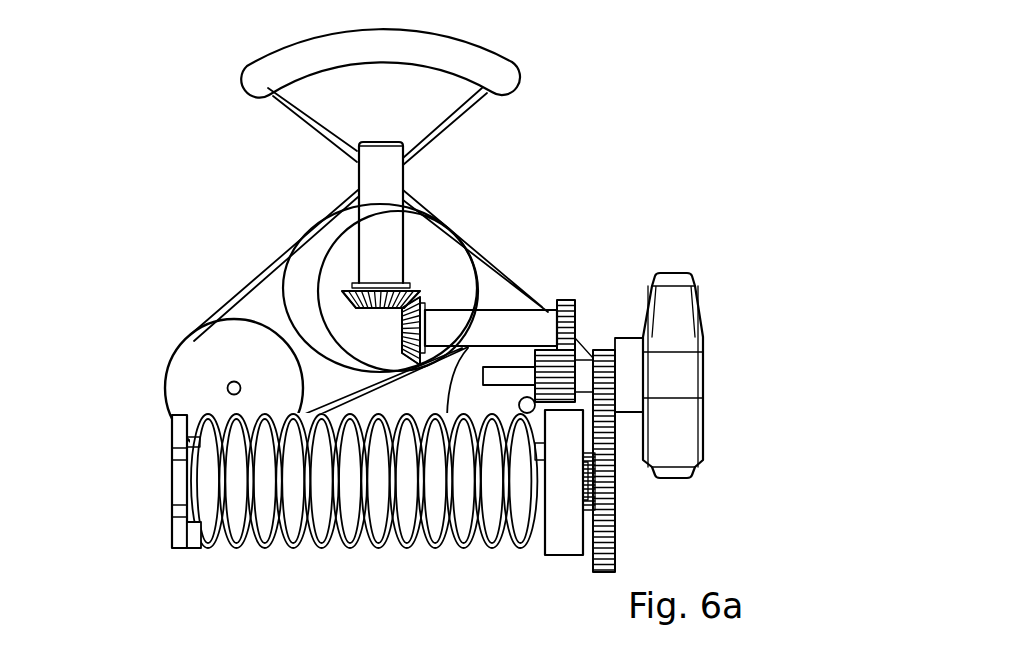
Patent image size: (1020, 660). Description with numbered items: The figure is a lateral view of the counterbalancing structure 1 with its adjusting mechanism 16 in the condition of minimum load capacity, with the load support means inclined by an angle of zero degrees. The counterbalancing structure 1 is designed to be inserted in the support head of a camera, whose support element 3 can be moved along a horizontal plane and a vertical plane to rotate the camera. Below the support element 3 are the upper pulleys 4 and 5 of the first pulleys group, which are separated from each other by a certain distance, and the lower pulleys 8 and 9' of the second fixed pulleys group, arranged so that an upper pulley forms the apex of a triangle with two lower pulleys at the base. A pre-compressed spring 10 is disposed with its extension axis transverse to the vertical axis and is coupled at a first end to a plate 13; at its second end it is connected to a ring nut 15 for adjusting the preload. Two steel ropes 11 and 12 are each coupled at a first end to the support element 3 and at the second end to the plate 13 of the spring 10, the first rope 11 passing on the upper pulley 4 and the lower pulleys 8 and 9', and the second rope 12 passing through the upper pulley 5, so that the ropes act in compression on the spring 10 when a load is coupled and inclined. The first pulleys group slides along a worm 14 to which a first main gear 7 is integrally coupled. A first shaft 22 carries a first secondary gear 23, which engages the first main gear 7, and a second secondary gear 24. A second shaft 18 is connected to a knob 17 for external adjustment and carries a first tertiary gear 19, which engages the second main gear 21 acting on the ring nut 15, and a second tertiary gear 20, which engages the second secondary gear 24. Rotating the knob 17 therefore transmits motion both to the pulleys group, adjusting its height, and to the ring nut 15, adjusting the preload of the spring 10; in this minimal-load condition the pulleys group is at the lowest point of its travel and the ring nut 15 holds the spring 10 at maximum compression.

The counterbalancing structure 1 is at (566, 134).
The support element 3 is at (487, 62).
The upper pulley 4 is at (297, 242).
The upper pulley 5 is at (410, 210).
The first main gear 7 is at (400, 322).
The lower pulley 8 is at (216, 340).
The lower pulley 9' is at (492, 289).
The pre-compressed elastic means 10 is at (268, 543).
The first rope 11 is at (347, 195).
The second rope 12 is at (405, 190).
The plate 13 is at (183, 537).
The worm 14 is at (397, 155).
The ring nut 15 is at (558, 542).
The adjusting mechanism 16 is at (627, 430).
The knob 17 is at (700, 315).
The second shaft 18 is at (517, 368).
The first tertiary gear 19 is at (600, 350).
The second tertiary gear 20 is at (543, 350).
The second main gear 21 is at (600, 560).
The first shaft 22 is at (500, 307).
The first secondary gear 23 is at (418, 335).
The second secondary gear 24 is at (570, 303).